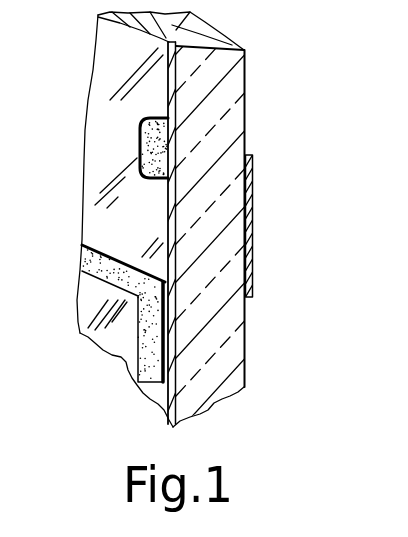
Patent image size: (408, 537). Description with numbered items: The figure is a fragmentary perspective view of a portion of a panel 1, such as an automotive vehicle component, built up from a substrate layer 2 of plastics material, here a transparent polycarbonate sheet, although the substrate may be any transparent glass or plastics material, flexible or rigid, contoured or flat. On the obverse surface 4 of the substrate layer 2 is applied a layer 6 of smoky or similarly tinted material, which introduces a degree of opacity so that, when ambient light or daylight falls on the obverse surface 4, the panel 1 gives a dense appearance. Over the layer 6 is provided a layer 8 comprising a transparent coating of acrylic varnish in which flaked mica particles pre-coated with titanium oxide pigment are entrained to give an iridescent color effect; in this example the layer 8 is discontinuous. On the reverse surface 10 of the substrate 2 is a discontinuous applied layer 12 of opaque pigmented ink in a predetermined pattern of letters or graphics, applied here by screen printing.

The panel 1 is at (244, 50).
The substrate layer 2 is at (226, 96).
The obverse surface 4 is at (162, 390).
The layer of smoky or tinted material 6 is at (109, 221).
The layer of transparent coating with flaked mica particles 8 is at (140, 153).
The reverse surface 10 is at (262, 338).
The discontinuous applied layer of opaque pigmented ink 12 is at (253, 230).